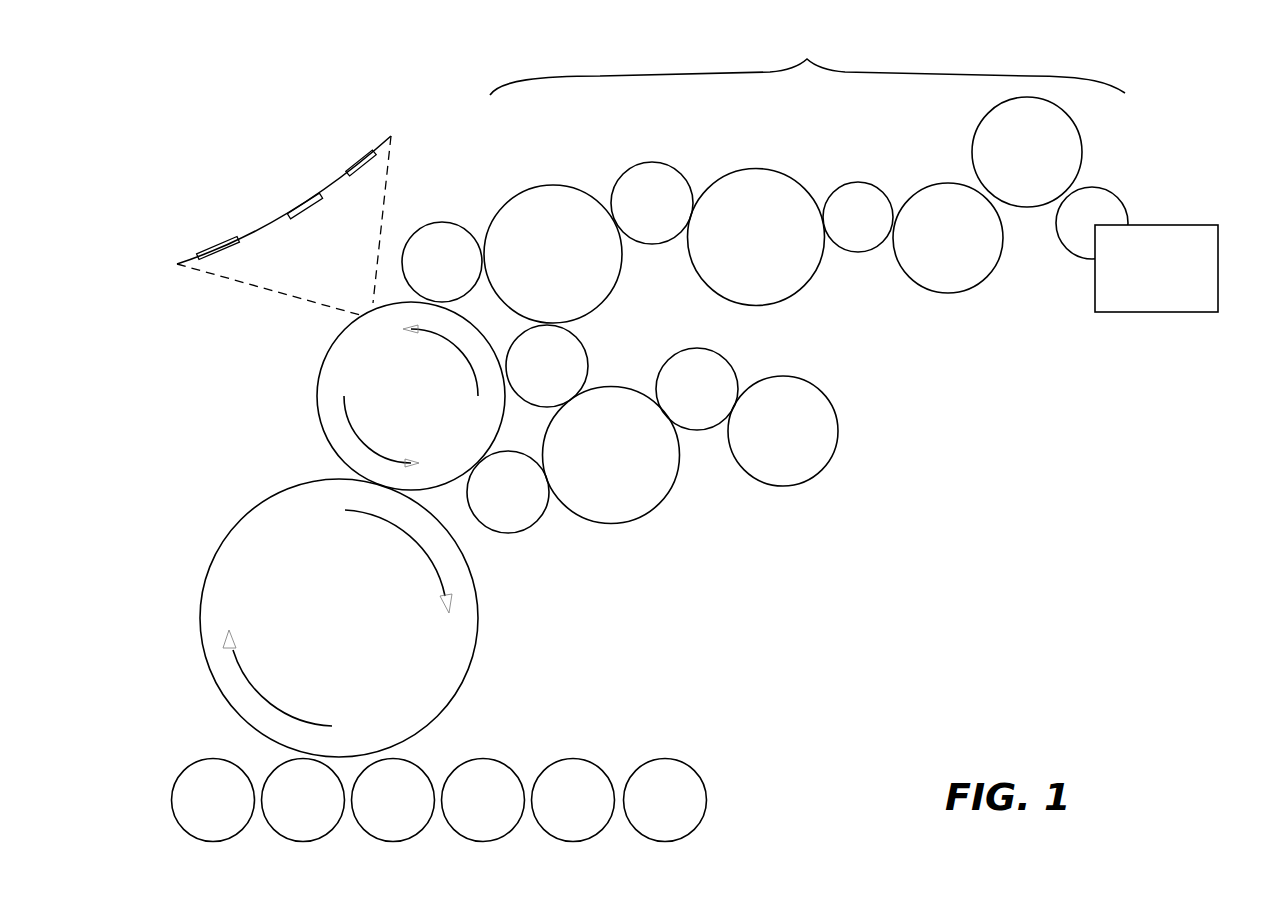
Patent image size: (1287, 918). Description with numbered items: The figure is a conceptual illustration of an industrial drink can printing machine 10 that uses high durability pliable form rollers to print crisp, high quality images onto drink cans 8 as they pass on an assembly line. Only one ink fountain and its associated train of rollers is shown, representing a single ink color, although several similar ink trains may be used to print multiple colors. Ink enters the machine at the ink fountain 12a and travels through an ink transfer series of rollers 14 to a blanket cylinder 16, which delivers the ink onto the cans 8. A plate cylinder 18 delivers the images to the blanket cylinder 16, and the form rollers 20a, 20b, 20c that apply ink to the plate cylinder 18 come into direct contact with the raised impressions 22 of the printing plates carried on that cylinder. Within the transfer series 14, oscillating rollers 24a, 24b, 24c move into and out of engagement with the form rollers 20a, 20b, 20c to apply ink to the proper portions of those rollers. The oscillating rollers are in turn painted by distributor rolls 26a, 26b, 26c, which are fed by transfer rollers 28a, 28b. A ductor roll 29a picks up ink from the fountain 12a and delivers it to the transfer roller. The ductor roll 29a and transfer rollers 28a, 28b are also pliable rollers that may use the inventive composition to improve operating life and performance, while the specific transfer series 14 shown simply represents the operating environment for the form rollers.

The drink cans 8 is at (558, 748).
The industrial drink can printing machine 10 is at (1203, 105).
The ink fountain 12a is at (1137, 249).
The ink transfer series of rollers 14 is at (807, 64).
The blanket cylinder 16 is at (339, 618).
The plate cylinder 18 is at (411, 396).
The form roller 20a is at (442, 262).
The form roller 20b is at (547, 366).
The form roller 20c is at (508, 492).
The raised impressions 22 is at (248, 257).
The oscillating roller 24a is at (553, 254).
The oscillating roller 24b is at (756, 237).
The oscillating roller 24c is at (611, 455).
The distributor roll 26a is at (652, 203).
The distributor roll 26b is at (858, 217).
The distributor roll 26c is at (697, 389).
The transfer roller 28a is at (948, 238).
The transfer roller 28b is at (783, 431).
The ductor roll 29a is at (1027, 152).